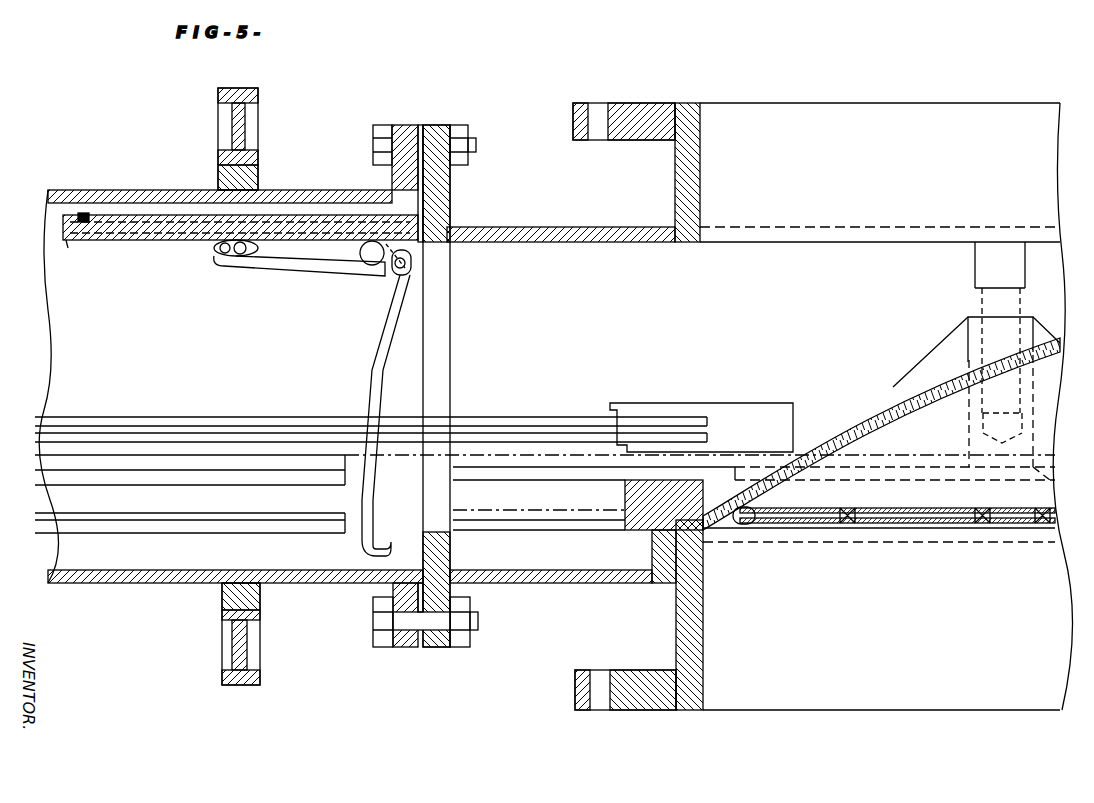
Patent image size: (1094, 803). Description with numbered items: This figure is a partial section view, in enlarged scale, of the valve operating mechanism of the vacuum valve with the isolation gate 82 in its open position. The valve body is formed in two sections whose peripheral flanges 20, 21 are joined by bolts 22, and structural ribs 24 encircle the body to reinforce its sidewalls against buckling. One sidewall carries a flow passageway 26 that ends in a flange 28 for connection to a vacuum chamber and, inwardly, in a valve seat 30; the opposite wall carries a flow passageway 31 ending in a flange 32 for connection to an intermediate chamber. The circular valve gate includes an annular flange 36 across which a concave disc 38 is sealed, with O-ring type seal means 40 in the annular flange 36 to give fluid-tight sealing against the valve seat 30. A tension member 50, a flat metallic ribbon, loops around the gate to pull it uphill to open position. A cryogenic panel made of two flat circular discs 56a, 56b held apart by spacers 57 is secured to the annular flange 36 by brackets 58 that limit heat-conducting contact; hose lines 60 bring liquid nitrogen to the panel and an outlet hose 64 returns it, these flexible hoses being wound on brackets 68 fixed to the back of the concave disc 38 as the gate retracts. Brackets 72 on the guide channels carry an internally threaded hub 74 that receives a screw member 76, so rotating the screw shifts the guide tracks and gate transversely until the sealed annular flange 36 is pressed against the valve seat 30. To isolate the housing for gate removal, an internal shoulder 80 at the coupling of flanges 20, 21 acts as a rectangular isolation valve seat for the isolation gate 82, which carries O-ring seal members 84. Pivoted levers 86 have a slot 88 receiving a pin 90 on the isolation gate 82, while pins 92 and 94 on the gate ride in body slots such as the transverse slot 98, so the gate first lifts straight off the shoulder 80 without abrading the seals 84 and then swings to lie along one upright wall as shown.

The peripheral flange 20 is at (437, 640).
The peripheral flange 21 is at (405, 640).
The bolts 22 is at (462, 640).
The structural ribs 24 is at (252, 680).
The flow passageway 26 is at (703, 640).
The flange 28 is at (630, 712).
The valve seat 30 is at (648, 535).
The flow passageway 31 is at (702, 166).
The flange 32 is at (625, 103).
The annular flange 36 is at (655, 497).
The concave disc 38 is at (824, 410).
The seal means 40 is at (690, 540).
The tension member 50 is at (190, 500).
The flat circular disc 56a is at (835, 525).
The flat circular disc 56b is at (828, 510).
The spacers 57 is at (982, 512).
The brackets 58 is at (735, 530).
The hose lines 60 is at (474, 437).
The outlet hose 64 is at (527, 420).
The brackets 68 is at (633, 405).
The brackets 72 is at (935, 355).
The internally threaded hub 74 is at (970, 330).
The screw member 76 is at (978, 298).
The internal shoulder 80 is at (425, 552).
The isolation gate 82 is at (128, 240).
The seal members 84 is at (92, 214).
The levers 86 is at (297, 263).
The slot 88 is at (222, 256).
The pin 90 is at (241, 256).
The pin 92 is at (67, 241).
The pin 94 is at (411, 263).
The transverse slot 98 is at (385, 330).